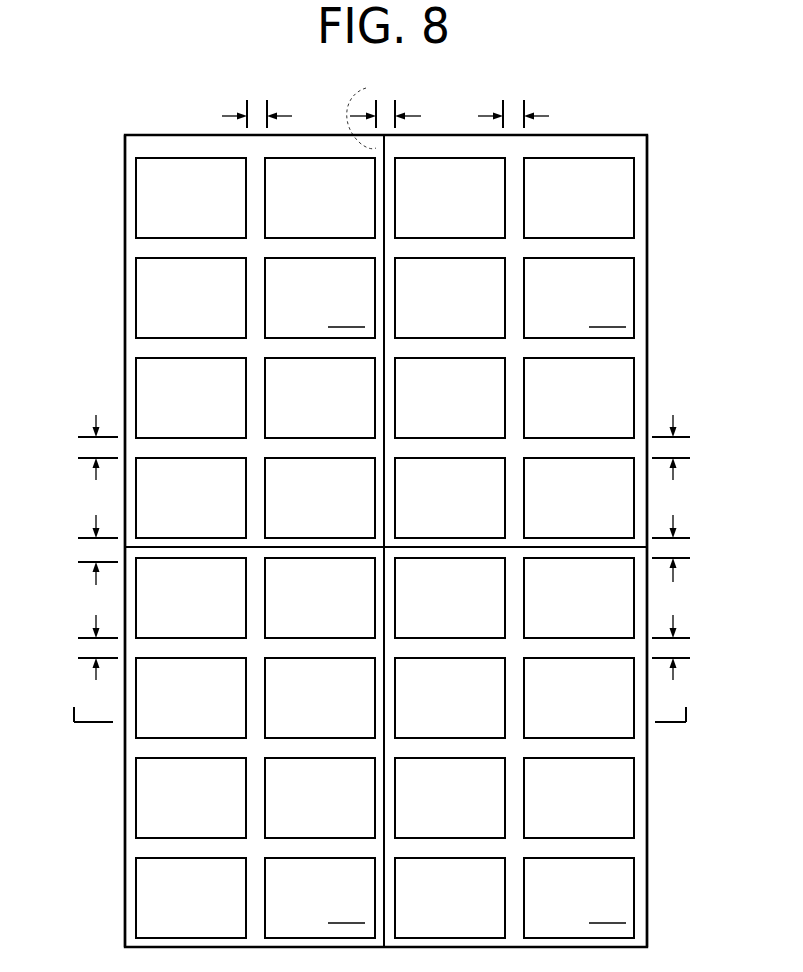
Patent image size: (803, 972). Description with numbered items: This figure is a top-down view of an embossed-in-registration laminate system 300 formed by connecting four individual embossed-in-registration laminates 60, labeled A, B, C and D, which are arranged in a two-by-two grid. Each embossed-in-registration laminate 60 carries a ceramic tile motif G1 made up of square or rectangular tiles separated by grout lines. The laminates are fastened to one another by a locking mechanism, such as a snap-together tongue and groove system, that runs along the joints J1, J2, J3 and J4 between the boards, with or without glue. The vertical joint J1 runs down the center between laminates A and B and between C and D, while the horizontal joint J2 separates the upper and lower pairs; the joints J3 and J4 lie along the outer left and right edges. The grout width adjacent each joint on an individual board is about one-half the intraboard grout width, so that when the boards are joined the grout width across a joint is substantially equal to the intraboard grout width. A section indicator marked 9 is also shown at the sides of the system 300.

The embossed-in-registration laminate system 300 is at (178, 112).
The embossed-in-registration laminate 60 is at (124, 268).
The section line of FIG. 9 is at (381, 711).
The joint J1 is at (387, 148).
The joint J2 is at (603, 548).
The joint J3 is at (124, 405).
The joint J4 is at (647, 383).
The ceramic tile motif G1 is at (477, 604).